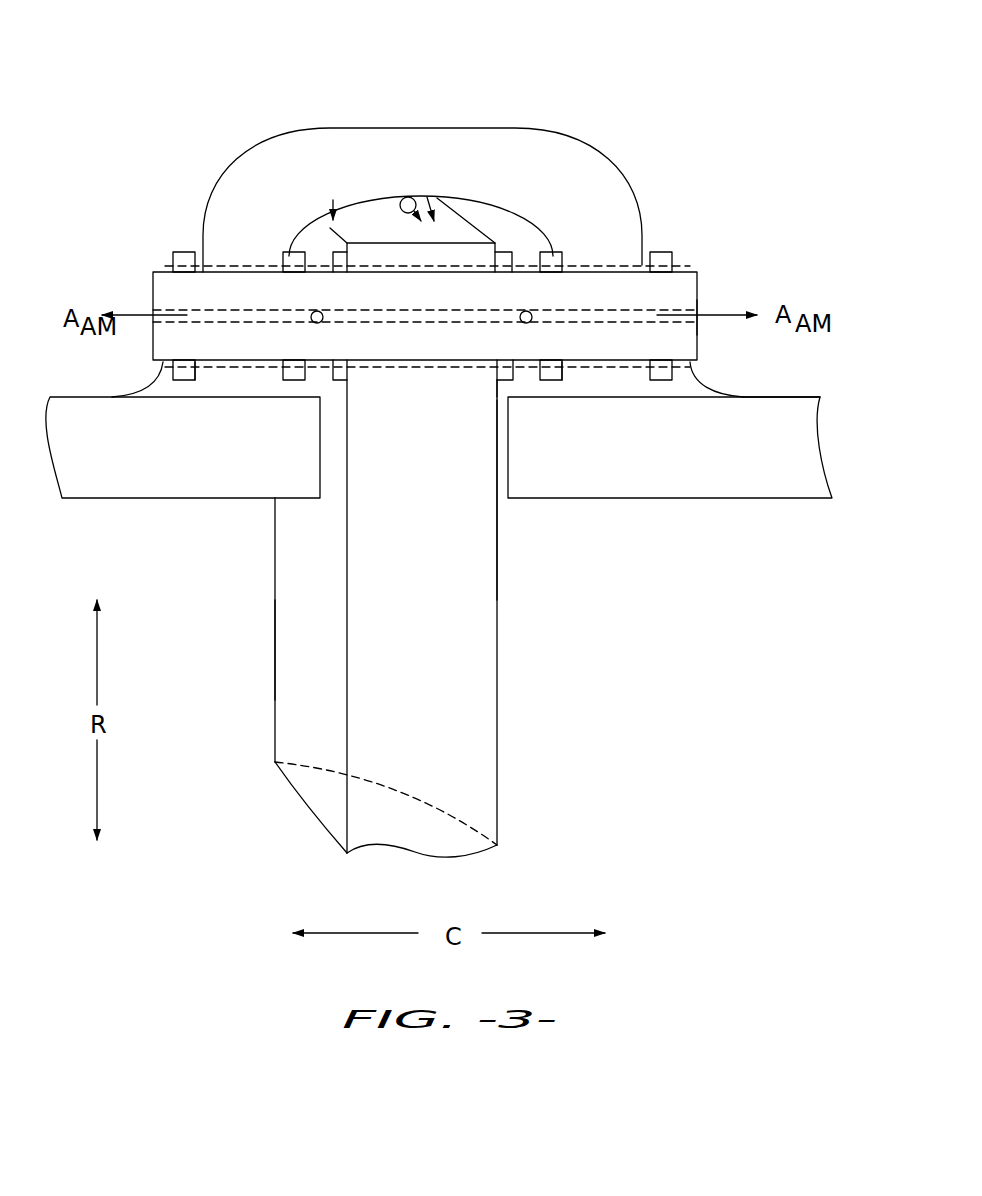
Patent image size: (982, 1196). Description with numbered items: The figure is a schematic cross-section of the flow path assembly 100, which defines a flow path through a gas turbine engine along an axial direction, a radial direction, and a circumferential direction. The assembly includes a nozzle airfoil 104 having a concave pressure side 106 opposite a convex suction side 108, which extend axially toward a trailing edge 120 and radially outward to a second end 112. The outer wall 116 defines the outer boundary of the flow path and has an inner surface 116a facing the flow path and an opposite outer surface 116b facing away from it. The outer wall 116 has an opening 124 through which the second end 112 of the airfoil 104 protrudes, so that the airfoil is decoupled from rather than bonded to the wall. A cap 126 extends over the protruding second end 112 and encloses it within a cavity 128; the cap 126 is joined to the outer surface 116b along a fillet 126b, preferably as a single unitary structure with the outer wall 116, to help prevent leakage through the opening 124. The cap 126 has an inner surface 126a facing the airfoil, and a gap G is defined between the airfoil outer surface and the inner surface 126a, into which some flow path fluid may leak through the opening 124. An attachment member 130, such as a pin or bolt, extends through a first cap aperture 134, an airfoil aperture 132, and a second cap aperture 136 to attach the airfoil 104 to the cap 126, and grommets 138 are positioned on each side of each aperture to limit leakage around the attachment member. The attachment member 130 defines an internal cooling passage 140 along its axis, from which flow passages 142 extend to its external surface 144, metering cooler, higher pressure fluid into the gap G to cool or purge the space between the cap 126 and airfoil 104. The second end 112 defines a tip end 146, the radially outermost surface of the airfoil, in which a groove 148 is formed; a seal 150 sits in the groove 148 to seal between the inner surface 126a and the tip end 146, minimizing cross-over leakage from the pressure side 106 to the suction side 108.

The flow path assembly 100 is at (240, 84).
The nozzle airfoil 104 is at (293, 670).
The pressure side 106 is at (302, 727).
The suction side 108 is at (508, 732).
The second end 112 is at (470, 192).
The outer wall 116 is at (138, 485).
The inner surface 116a is at (703, 502).
The outer surface 116b is at (777, 392).
The trailing edge 120 is at (272, 617).
The opening 124 is at (502, 492).
The cap 126 is at (332, 150).
The inner surface 126a is at (330, 228).
The fillet 126b is at (718, 377).
The cavity 128 is at (557, 252).
The attachment member 130 is at (160, 290).
The airfoil aperture 132 is at (457, 370).
The first cap aperture 134 is at (215, 372).
The second cap aperture 136 is at (608, 372).
The grommet 138 is at (528, 222).
The internal cooling passage 140 is at (699, 313).
The flow passage 142 is at (312, 323).
The external surface 144 is at (600, 262).
The tip end 146 is at (427, 197).
The groove 148 is at (418, 226).
The seal 150 is at (400, 202).
The gap G is at (522, 372).